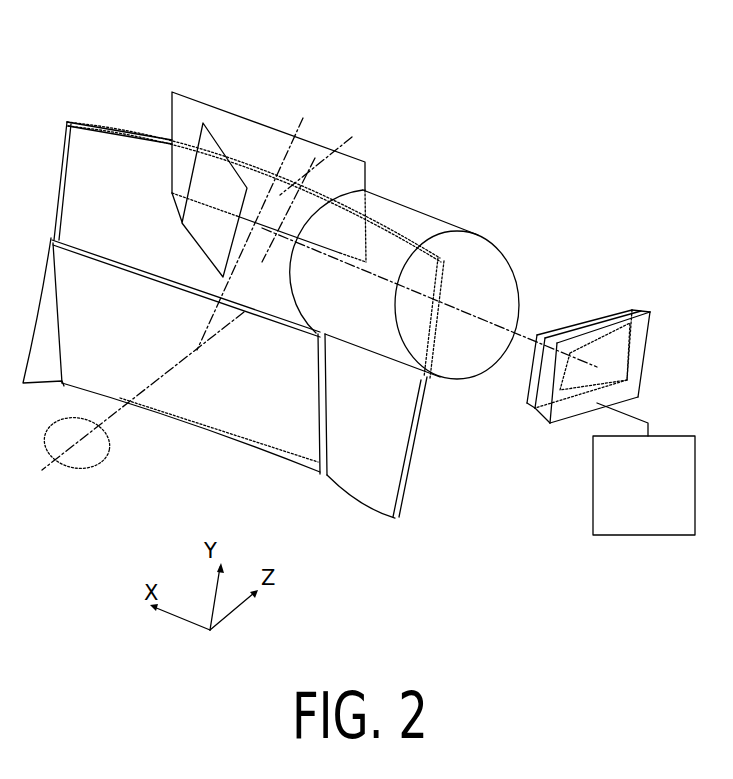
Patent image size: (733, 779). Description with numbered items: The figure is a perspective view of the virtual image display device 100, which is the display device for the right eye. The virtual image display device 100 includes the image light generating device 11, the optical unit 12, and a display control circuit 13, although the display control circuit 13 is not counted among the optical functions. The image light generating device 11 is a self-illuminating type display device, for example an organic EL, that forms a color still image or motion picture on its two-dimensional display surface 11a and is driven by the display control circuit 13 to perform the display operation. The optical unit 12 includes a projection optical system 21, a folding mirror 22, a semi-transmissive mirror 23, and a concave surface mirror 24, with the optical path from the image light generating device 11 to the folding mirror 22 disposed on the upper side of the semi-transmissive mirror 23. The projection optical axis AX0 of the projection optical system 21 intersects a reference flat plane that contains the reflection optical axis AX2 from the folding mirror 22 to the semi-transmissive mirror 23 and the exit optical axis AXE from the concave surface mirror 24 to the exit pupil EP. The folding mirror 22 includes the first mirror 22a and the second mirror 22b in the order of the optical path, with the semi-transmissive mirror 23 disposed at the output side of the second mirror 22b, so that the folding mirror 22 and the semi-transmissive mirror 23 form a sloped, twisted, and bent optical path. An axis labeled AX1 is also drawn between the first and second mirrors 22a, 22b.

The virtual image display device 100 is at (690, 50).
The image light generating device 11 is at (648, 310).
The display surface 11a is at (588, 335).
The optical unit 12 is at (345, 112).
The display control circuit 13 is at (645, 535).
The projection optical system 21 is at (407, 222).
The folding mirror 22 is at (167, 127).
The first mirror 22a is at (180, 218).
The second mirror 22b is at (250, 133).
The semi-transmissive mirror 23 is at (167, 402).
The concave surface mirror 24 is at (390, 434).
The projection optical axis AX0 is at (452, 302).
The optical axis AX1 is at (308, 105).
The reflection optical axis AX2 is at (383, 131).
The exit optical axis AXE is at (240, 318).
The exit pupil EP is at (74, 466).